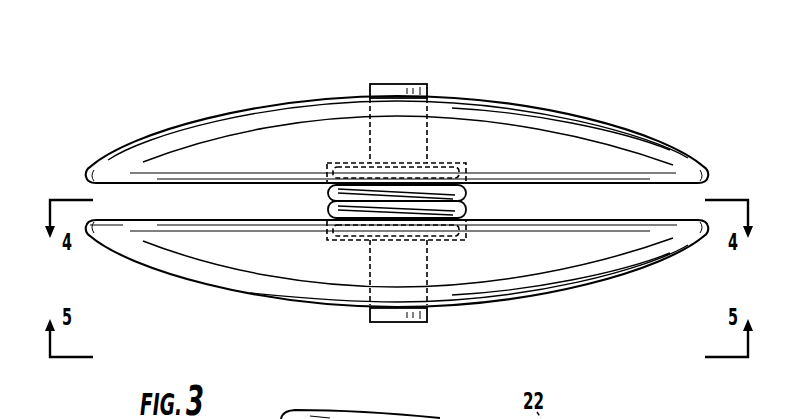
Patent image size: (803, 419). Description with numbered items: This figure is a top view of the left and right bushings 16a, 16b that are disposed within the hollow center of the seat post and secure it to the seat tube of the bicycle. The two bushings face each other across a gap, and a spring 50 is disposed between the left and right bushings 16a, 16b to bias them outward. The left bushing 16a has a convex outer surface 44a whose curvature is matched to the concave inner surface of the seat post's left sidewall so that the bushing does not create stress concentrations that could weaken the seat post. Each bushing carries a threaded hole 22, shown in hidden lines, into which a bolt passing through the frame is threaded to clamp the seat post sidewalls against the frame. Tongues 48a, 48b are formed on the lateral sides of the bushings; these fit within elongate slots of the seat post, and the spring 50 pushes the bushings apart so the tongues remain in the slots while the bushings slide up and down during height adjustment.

The left bushing 16a is at (628, 158).
The right bushing 16b is at (563, 257).
The outer surface of left bushing 44a is at (190, 119).
The threaded hole 22 is at (367, 142).
The spring 50 is at (330, 199).
The tongue of left bushing 48a is at (384, 86).
The tongue of right bushing 48b is at (385, 316).